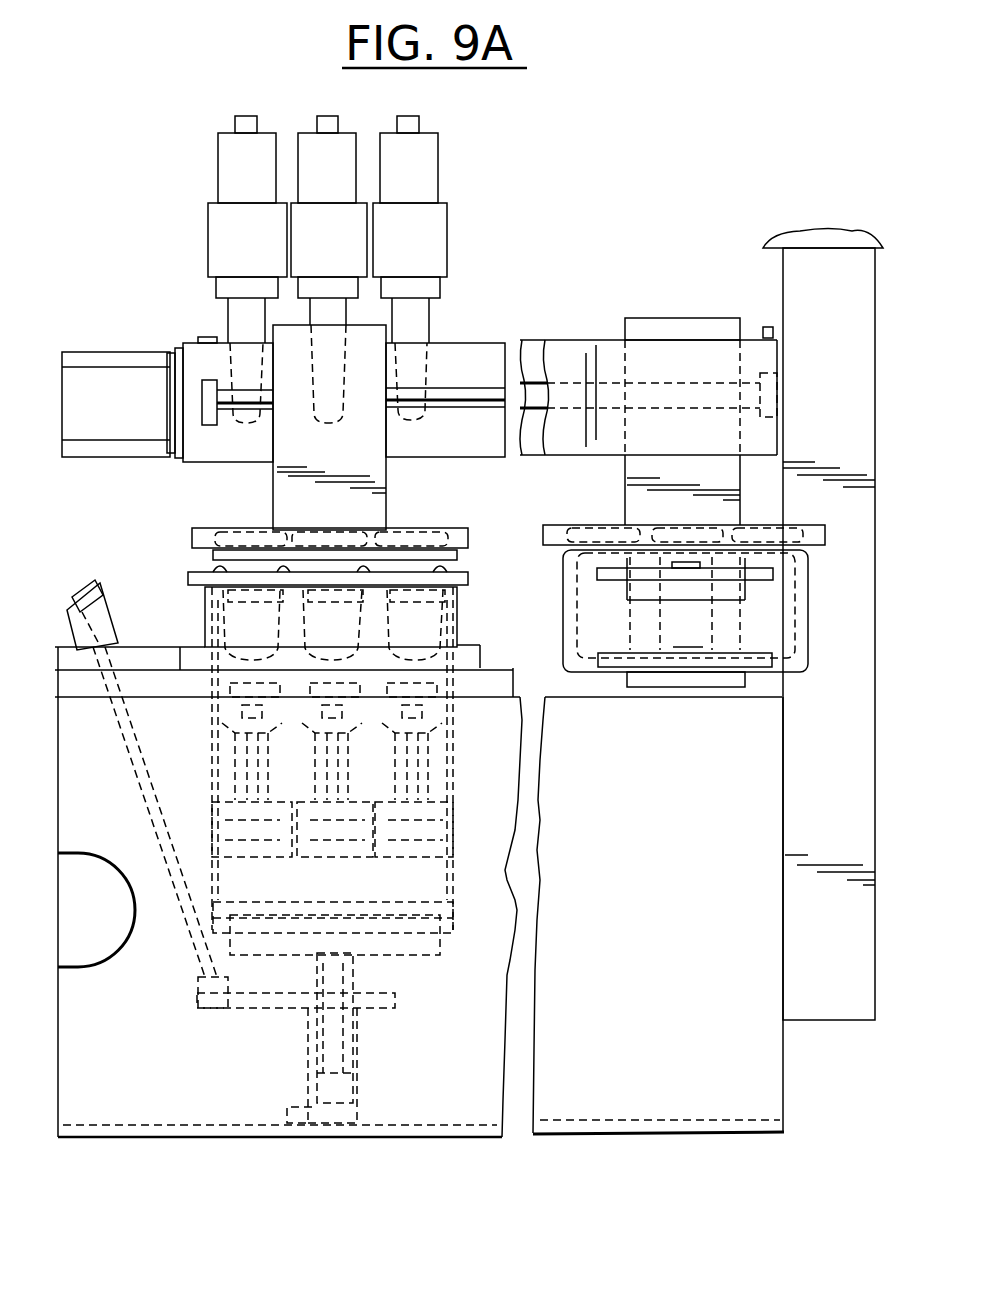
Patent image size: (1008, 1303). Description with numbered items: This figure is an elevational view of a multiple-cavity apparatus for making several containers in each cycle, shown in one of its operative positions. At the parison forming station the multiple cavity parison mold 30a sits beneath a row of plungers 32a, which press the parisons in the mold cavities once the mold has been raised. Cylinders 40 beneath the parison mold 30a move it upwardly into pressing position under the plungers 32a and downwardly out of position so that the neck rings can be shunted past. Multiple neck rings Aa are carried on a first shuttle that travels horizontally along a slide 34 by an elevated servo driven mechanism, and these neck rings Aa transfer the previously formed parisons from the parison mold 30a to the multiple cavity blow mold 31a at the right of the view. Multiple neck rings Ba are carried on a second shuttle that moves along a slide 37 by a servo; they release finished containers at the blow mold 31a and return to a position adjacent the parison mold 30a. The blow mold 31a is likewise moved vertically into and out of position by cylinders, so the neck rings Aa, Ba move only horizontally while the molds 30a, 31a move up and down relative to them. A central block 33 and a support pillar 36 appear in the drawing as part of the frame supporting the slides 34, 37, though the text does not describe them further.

The plungers 32a is at (235, 315).
The central support block 33 is at (287, 497).
The slide 34 is at (460, 395).
The slide 37 is at (532, 393).
The support pillar 36 is at (637, 467).
The multiple neck rings Aa is at (192, 540).
The multiple neck rings Ba is at (560, 535).
The multiple cavity parison mold 30a is at (217, 615).
The multiple cavity blow mold 31a is at (568, 620).
The cylinders 40 is at (225, 890).